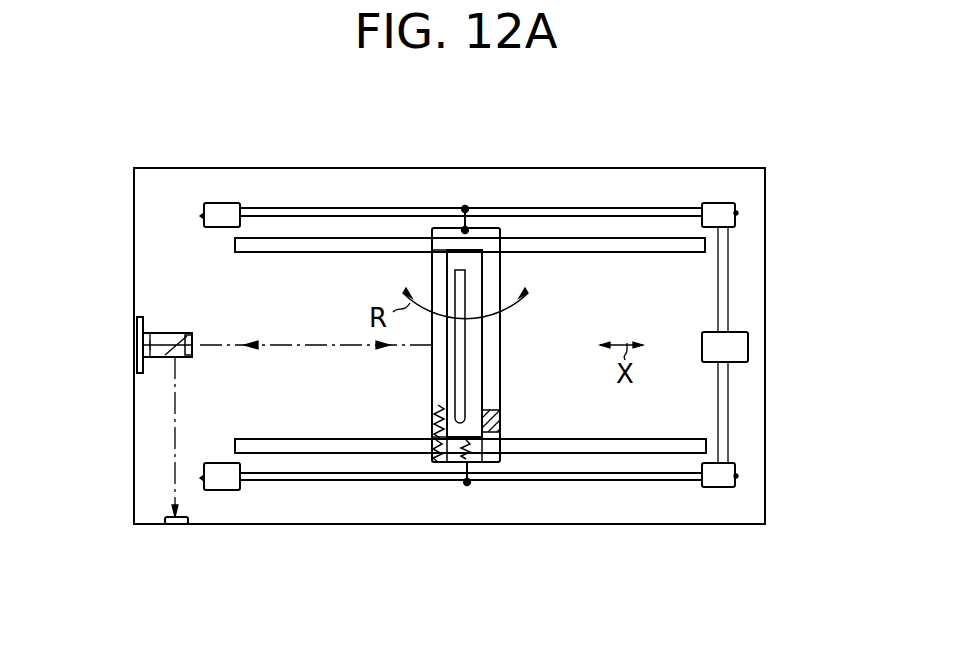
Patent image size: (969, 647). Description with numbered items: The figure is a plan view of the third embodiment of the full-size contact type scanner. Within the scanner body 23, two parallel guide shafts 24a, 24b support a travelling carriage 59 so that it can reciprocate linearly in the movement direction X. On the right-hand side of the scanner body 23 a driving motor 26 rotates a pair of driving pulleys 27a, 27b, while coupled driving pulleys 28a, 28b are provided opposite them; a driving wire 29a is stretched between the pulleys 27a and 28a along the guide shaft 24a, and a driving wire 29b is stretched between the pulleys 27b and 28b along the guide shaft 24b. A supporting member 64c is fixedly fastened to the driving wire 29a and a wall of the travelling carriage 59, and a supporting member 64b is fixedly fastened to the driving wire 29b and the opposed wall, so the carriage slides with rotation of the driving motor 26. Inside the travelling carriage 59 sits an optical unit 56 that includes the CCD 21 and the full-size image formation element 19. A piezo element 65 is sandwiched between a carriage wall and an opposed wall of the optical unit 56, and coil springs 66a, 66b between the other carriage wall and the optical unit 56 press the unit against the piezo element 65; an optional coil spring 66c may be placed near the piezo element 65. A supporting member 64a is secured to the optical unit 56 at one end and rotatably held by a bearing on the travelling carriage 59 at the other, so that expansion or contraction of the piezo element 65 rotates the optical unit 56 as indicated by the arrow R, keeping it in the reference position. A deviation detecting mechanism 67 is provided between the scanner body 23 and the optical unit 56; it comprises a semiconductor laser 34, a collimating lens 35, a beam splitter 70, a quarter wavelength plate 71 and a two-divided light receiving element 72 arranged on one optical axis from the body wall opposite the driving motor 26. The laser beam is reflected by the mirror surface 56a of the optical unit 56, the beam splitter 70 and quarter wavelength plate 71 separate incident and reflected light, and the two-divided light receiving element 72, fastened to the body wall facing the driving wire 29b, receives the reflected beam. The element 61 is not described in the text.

The scanner body 23 is at (766, 236).
The driving wire 29a is at (603, 215).
The driving wire 29b is at (624, 482).
The guide shaft 24a is at (662, 240).
The guide shaft 24b is at (690, 439).
The coupled driving pulley 28a is at (220, 203).
The coupled driving pulley 28b is at (226, 492).
The driving pulley 27a is at (720, 203).
The driving pulley 27b is at (720, 488).
The driving motor 26 is at (745, 343).
The mirror surface 56a is at (448, 387).
The optical unit 56 is at (483, 463).
The travelling carriage 59 is at (431, 236).
The top cap 61 is at (453, 228).
The supporting member 64a is at (470, 247).
The supporting member 64b is at (469, 481).
The supporting member 64c is at (465, 206).
The piezo element 65 is at (502, 422).
The coil spring 66a is at (438, 465).
The coil spring 66b is at (436, 412).
The coil spring 66c is at (466, 461).
The charge-coupled device 21 is at (440, 446).
The full-size image formation element 19 is at (449, 463).
The deviation detecting mechanism 67 is at (158, 392).
The semiconductor laser 34 is at (145, 376).
The collimating lens 35 is at (137, 317).
The beam splitter 70 is at (173, 332).
The quarter wavelength plate 71 is at (203, 333).
The 2-divided light receiving element 72 is at (177, 525).